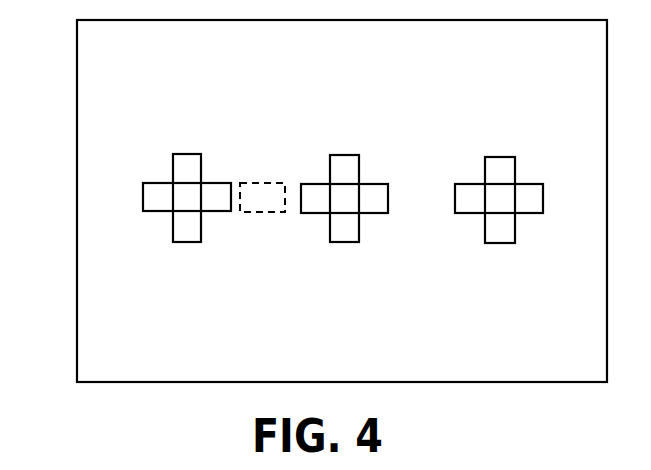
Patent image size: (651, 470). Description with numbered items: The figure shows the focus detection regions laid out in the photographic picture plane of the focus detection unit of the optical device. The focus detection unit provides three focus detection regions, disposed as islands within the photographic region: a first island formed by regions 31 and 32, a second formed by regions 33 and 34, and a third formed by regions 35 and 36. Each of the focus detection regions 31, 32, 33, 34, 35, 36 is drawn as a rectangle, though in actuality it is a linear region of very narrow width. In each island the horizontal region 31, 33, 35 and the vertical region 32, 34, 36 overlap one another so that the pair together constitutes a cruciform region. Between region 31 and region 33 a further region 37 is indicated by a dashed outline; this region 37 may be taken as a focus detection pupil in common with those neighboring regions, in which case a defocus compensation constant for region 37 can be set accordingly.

The focus detection region 31 is at (148, 200).
The focus detection region 32 is at (190, 168).
The focus detection region 33 is at (311, 203).
The focus detection region 34 is at (346, 168).
The focus detection region 35 is at (536, 207).
The focus detection region 36 is at (505, 168).
The region 37 is at (253, 203).